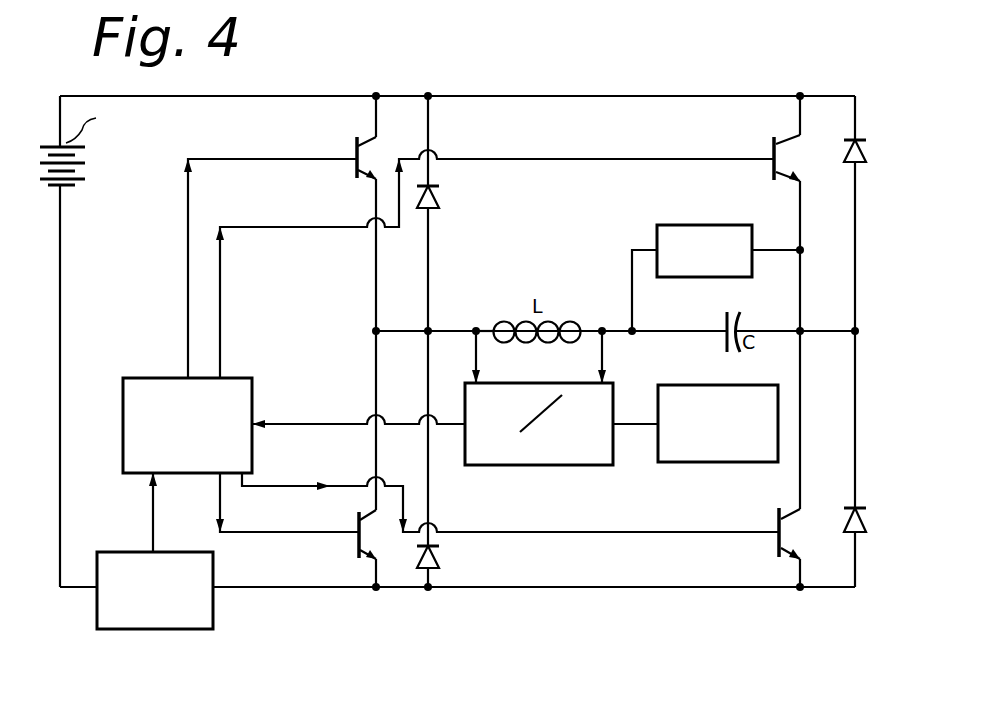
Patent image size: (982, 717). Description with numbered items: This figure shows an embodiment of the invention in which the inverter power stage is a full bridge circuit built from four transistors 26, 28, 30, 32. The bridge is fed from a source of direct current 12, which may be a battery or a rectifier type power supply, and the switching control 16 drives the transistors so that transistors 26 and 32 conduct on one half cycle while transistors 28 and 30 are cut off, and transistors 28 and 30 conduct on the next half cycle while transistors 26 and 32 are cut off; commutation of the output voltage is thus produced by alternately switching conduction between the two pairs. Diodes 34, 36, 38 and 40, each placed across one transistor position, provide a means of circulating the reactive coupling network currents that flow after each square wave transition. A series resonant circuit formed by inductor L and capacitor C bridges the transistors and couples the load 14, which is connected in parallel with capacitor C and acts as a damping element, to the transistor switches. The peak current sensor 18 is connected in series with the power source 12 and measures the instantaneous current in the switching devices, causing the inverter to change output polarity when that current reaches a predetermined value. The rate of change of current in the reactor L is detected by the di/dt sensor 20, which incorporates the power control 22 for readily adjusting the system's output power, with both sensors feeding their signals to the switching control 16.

The source of direct current 12 is at (78, 183).
The load impedance 14 is at (683, 228).
The switching control circuit 16 is at (163, 384).
The peak current sensor 18 is at (128, 552).
The di/dt sensor 20 is at (520, 466).
The power control circuit 22 is at (712, 463).
The transistor 26 is at (356, 168).
The transistor 28 is at (355, 538).
The transistor 30 is at (772, 163).
The transistor 32 is at (777, 537).
The diode 34 is at (439, 194).
The diode 36 is at (439, 554).
The diode 38 is at (864, 148).
The diode 40 is at (864, 515).